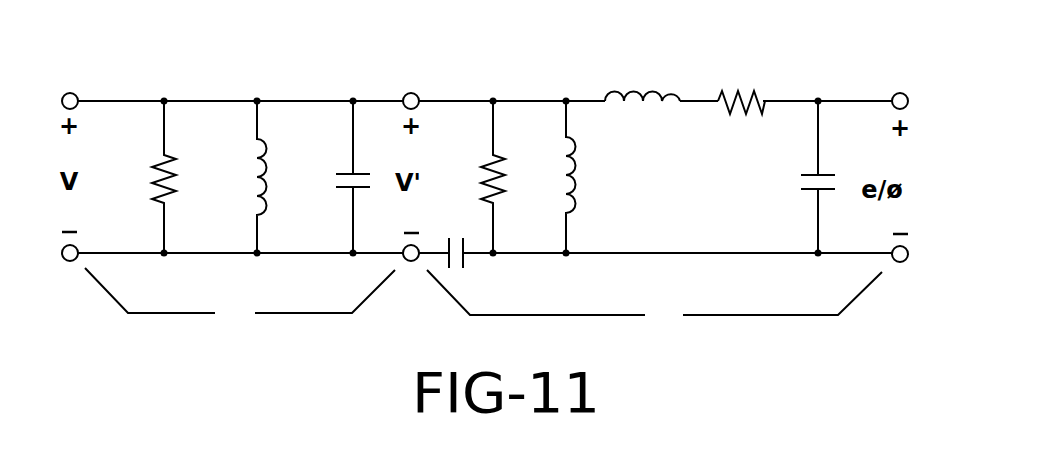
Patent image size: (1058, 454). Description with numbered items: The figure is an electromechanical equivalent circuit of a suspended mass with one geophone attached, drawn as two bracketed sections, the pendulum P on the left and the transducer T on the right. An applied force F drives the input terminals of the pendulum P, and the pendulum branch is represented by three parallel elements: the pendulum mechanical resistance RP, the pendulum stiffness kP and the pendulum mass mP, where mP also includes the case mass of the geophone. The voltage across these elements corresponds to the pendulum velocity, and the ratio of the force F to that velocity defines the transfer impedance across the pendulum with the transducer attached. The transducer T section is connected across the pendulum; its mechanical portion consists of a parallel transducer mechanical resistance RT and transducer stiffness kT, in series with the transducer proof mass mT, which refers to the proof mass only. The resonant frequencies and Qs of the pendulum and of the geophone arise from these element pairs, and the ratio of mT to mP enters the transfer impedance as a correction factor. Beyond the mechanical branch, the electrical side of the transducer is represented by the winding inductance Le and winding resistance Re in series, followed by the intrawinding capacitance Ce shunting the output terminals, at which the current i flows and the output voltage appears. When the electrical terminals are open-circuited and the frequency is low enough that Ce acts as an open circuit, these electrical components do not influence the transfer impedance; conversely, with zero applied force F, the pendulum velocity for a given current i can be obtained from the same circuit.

The applied force F is at (78, 73).
The current i is at (888, 78).
The pendulum mechanical resistance RP is at (146, 177).
The pendulum stiffness kP is at (248, 177).
The pendulum mass mP is at (332, 177).
The transducer mechanical resistance RT is at (470, 177).
The transducer stiffness kT is at (560, 177).
The transducer proof mass mT is at (455, 237).
The electrical inductance Le is at (645, 72).
The electrical resistance Re is at (755, 79).
The intrawinding capacitance Ce is at (781, 177).
The pendulum P is at (240, 298).
The transducer T is at (654, 300).